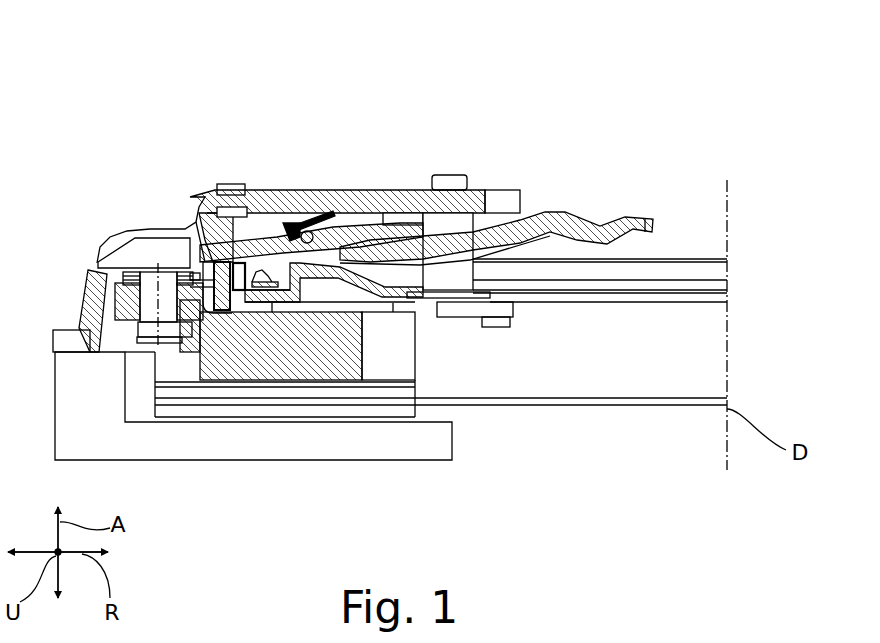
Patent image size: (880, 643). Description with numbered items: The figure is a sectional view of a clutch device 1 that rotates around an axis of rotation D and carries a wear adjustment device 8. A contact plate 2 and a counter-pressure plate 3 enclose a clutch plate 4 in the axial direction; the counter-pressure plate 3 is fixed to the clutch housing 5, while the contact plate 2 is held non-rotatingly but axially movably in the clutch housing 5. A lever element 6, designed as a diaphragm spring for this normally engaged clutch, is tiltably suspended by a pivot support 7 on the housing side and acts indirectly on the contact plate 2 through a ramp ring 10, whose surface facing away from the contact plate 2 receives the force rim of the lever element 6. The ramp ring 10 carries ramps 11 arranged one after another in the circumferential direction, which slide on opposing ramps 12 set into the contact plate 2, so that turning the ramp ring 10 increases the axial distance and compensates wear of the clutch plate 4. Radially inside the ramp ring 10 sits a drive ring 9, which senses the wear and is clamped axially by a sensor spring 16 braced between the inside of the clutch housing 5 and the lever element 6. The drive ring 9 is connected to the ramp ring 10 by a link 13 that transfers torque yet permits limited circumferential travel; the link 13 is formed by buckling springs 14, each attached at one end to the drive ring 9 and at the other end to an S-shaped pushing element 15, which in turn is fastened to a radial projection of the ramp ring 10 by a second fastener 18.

The clutch device 1 is at (680, 100).
The contact plate 2 is at (357, 348).
The counter-pressure plate 3 is at (320, 462).
The clutch plate 4 is at (570, 406).
The clutch housing 5 is at (192, 215).
The lever element 6 is at (552, 216).
The pivot support 7 is at (307, 230).
The wear adjustment device 8 is at (278, 271).
The drive ring 9 is at (347, 267).
The ramp ring 10 is at (222, 266).
The ramps 11 is at (222, 285).
The opposing ramps 12 is at (226, 310).
The link 13 is at (240, 295).
The buckling springs 14 is at (262, 242).
The pushing element 15 is at (220, 247).
The sensor spring 16 is at (335, 225).
The second fastener 18 is at (250, 280).